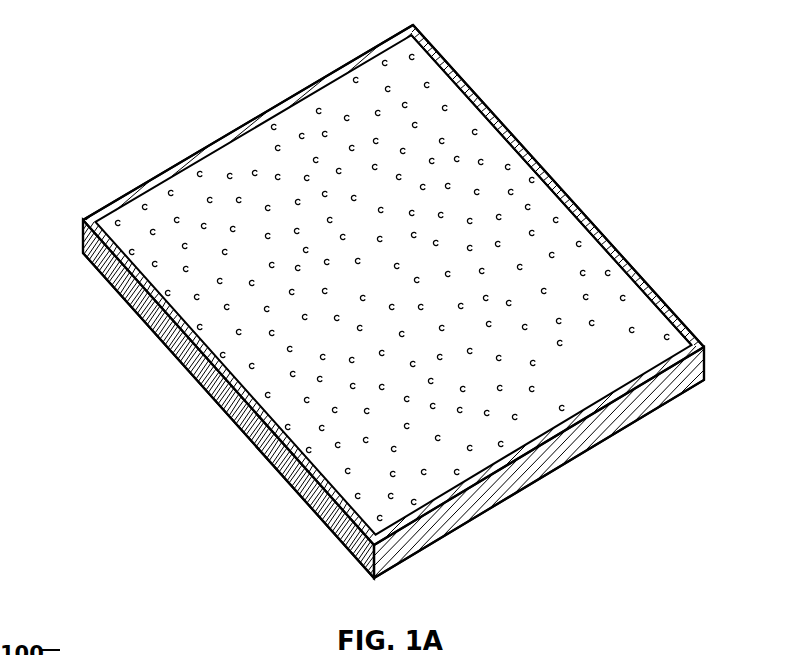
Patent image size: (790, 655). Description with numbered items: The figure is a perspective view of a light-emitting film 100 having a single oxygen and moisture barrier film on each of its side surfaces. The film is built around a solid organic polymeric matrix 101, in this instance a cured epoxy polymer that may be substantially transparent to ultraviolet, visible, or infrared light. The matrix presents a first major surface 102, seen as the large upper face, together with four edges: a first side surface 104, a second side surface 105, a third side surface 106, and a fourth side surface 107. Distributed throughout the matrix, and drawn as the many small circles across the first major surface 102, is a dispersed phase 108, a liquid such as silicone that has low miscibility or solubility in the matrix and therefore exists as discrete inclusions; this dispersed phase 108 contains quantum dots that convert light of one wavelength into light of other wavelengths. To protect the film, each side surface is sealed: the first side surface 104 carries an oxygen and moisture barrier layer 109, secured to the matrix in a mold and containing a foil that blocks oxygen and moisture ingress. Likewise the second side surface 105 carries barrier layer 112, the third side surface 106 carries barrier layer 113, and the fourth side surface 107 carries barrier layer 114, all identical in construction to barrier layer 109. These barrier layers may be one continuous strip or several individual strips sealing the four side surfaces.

The light-emitting film 100 is at (129, 80).
The solid organic polymeric matrix 101 is at (468, 123).
The first major surface 102 is at (612, 297).
The first side surface 104 is at (261, 114).
The second side surface 105 is at (553, 180).
The third side surface 106 is at (558, 450).
The fourth side surface 107 is at (230, 403).
The dispersed phase 108 is at (200, 172).
The oxygen and moisture barrier layer 109 is at (354, 65).
The oxygen and moisture barrier layer 112 is at (592, 227).
The oxygen and moisture barrier layer 113 is at (463, 507).
The oxygen and moisture barrier layer 114 is at (262, 442).